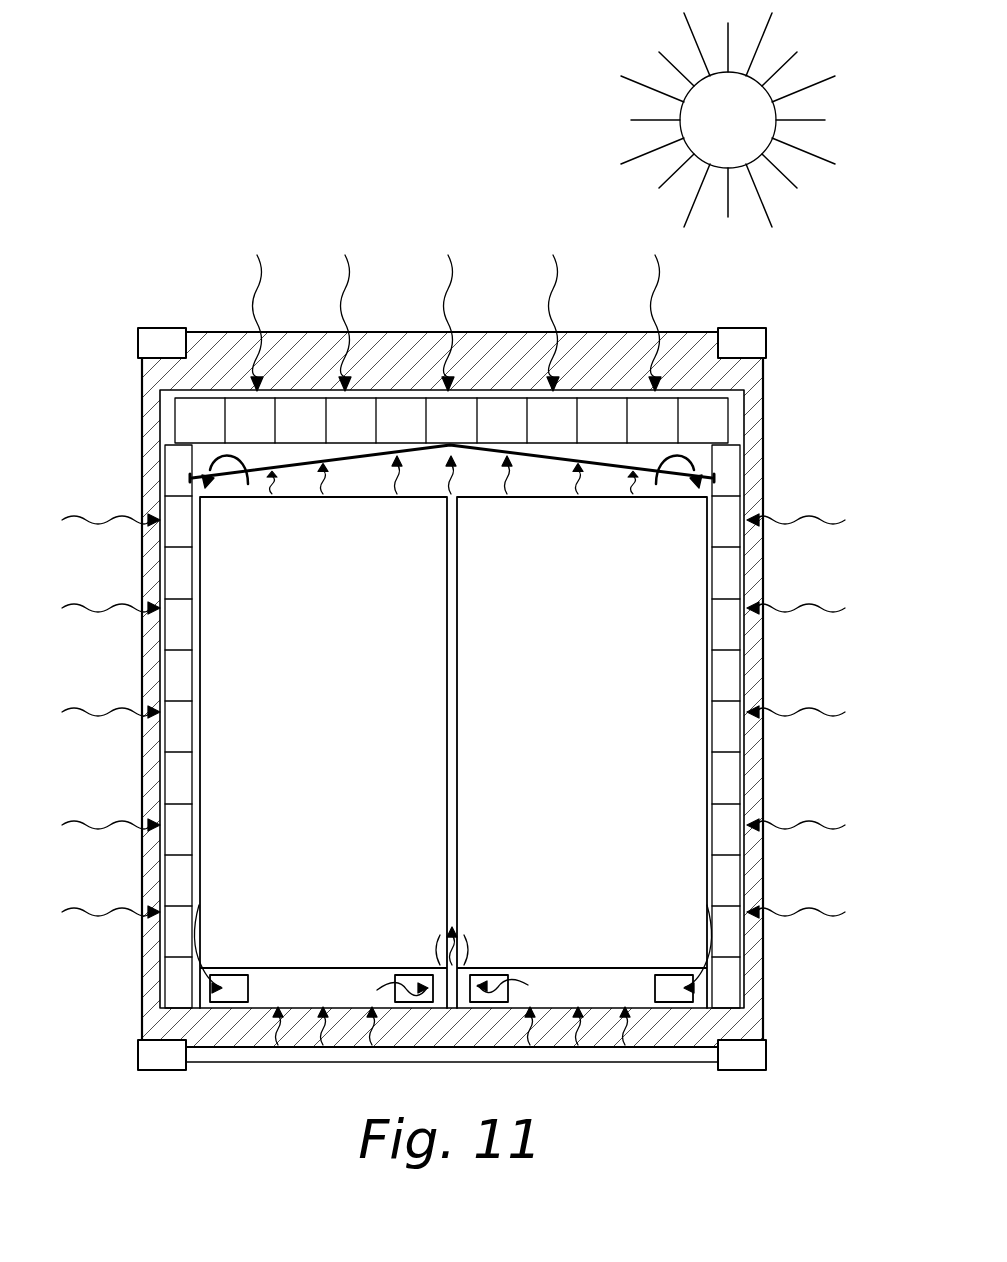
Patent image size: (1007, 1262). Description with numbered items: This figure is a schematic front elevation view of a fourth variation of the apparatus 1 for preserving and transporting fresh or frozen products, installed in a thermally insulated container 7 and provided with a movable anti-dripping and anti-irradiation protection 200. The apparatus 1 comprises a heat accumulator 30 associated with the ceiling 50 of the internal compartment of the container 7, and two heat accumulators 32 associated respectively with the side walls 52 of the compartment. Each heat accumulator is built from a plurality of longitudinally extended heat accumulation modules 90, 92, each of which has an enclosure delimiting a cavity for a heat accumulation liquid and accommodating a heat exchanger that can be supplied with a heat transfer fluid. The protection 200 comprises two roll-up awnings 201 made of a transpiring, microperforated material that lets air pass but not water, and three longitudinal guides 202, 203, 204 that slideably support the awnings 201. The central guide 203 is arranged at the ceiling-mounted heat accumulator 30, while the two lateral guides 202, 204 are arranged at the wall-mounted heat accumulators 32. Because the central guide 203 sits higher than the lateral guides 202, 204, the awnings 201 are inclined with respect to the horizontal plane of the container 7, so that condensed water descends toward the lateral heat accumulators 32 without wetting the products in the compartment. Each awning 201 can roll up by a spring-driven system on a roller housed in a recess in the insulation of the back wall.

The apparatus 1 is at (443, 619).
The container 7 is at (688, 328).
The heat accumulator 30 is at (418, 464).
The heat accumulators 32 is at (209, 740).
The ceiling 50 is at (528, 412).
The side walls 52 is at (160, 426).
The heat accumulation modules 90 is at (207, 412).
The heat accumulation modules 92 is at (178, 473).
The anti-dripping and anti-irradiation protection 200 is at (298, 480).
The roll-up awnings 201 is at (358, 462).
The lateral guide 202 is at (203, 492).
The central guide 203 is at (458, 452).
The lateral guide 204 is at (703, 490).